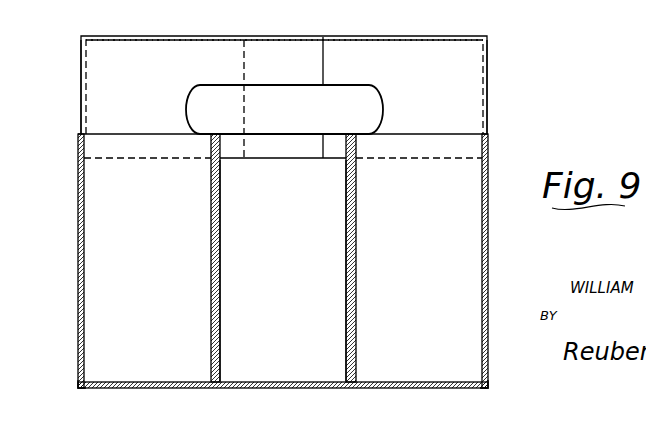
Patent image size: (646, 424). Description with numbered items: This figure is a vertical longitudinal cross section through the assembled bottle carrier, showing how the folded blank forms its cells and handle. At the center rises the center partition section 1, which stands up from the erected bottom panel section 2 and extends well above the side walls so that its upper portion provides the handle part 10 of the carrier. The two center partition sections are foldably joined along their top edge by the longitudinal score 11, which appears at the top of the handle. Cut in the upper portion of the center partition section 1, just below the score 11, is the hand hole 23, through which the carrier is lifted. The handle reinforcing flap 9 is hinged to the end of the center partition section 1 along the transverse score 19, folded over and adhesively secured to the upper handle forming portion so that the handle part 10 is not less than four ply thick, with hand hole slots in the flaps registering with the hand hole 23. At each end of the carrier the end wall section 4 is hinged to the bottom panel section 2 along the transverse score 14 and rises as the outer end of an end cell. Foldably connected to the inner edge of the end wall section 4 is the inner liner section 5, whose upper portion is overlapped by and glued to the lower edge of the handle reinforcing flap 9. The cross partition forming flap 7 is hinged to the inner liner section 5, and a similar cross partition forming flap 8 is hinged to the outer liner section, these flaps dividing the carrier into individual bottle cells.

The center partition section 1 is at (294, 264).
The bottom panel section 2 is at (313, 382).
The end wall section 4 is at (78, 215).
The inner liner section 5 is at (147, 143).
The cross partition forming flap 7 is at (211, 217).
The cross partition forming flap 8 is at (220, 234).
The handle reinforcing flap 9 is at (157, 68).
The handle part 10 is at (494, 71).
The longitudinal score 11 is at (220, 38).
The transverse score 14 is at (80, 385).
The transverse score 19 is at (81, 87).
The hand hole 23 is at (330, 100).